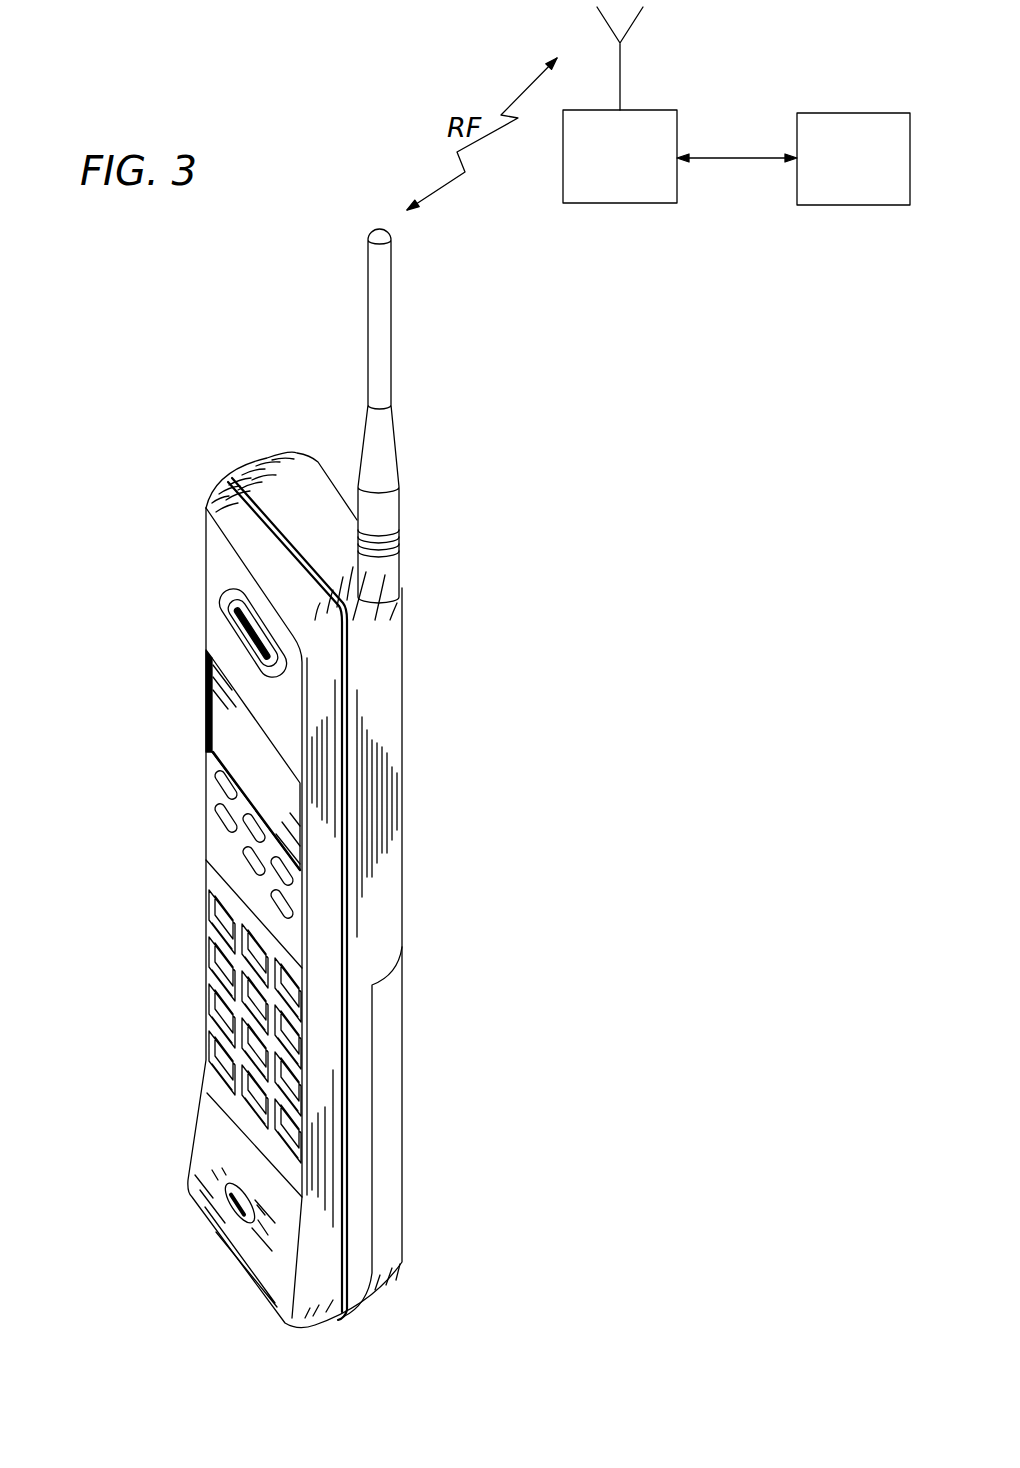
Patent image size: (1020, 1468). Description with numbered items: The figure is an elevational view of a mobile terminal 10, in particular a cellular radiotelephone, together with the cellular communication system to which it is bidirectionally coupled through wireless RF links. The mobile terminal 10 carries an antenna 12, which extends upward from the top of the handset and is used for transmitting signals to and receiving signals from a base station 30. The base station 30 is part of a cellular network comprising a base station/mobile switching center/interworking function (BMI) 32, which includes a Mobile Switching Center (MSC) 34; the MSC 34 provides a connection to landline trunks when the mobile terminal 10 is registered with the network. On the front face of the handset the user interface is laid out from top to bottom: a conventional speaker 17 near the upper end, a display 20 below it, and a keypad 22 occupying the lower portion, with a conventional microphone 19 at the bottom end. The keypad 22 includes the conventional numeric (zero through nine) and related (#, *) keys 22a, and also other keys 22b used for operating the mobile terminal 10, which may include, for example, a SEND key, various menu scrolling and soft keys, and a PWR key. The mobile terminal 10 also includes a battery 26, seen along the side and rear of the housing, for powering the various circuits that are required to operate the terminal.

The mobile terminal 10 is at (126, 491).
The antenna 12 is at (380, 348).
The speaker 17 is at (240, 612).
The microphone 19 is at (233, 1207).
The display 20 is at (230, 738).
The keypad 22 is at (298, 1043).
The numeric and related keys 22a is at (217, 1040).
The other keys 22b is at (223, 848).
The battery 26 is at (387, 1153).
The base station 30 is at (608, 203).
The base station/mobile switching center/interworking function (BMI) 32 is at (739, 166).
The Mobile Switching Center (MSC) 34 is at (855, 180).